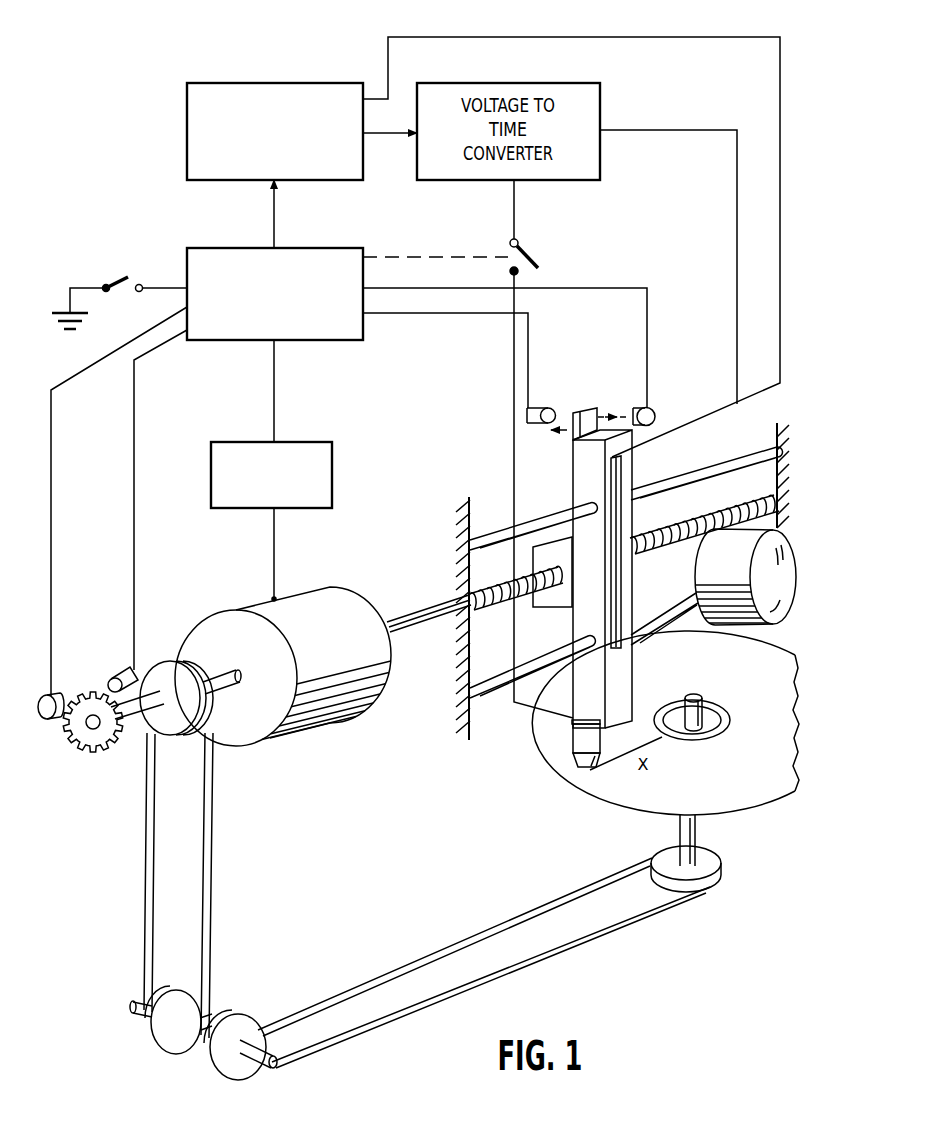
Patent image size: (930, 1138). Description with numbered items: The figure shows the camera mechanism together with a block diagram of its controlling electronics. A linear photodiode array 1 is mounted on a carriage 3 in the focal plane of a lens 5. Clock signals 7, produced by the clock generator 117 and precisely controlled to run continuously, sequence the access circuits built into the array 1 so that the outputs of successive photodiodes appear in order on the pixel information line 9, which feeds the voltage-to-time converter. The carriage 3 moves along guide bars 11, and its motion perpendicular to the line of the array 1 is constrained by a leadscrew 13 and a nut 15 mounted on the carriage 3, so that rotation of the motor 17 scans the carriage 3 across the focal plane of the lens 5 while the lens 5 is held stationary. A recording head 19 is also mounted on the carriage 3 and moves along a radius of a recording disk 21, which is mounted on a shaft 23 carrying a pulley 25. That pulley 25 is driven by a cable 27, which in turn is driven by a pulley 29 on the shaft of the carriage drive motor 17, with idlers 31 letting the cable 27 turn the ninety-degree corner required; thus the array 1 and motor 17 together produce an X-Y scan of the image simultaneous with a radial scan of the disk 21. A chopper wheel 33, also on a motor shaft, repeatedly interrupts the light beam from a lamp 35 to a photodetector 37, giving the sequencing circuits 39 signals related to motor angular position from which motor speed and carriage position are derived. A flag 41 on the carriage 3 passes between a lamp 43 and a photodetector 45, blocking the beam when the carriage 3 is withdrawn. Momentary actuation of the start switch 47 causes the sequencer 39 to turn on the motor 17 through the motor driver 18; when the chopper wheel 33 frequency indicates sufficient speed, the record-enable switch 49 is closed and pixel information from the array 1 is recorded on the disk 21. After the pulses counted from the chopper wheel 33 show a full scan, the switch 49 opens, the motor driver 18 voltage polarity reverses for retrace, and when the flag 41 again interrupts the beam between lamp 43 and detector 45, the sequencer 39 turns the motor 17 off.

The linear photodiode array 1 is at (623, 476).
The carriage 3 is at (623, 670).
The lens 5 is at (713, 575).
The clock signals 7 is at (689, 37).
The pixel information line 9 is at (650, 131).
The guide bars 11 is at (540, 517).
The leadscrew 13 is at (647, 534).
The nut 15 is at (560, 604).
The motor 17 is at (332, 587).
The motor driver 18 is at (303, 442).
The recording head 19 is at (577, 742).
The recording disk 21 is at (600, 790).
The shaft 23 is at (696, 837).
The pulley 25 is at (722, 866).
The cable 27 is at (516, 978).
The pulley 29 is at (158, 672).
The idlers 31 is at (170, 992).
The chopper wheel 33 is at (89, 746).
The lamp 35 is at (120, 677).
The photodetector 37 is at (56, 695).
The sequencing circuits 39 is at (300, 248).
The flag 41 is at (578, 410).
The lamp 43 is at (539, 425).
The photodetector 45 is at (655, 411).
The start switch 47 is at (117, 280).
The record-enable switch 49 is at (533, 265).
The clock generator 117 is at (277, 83).